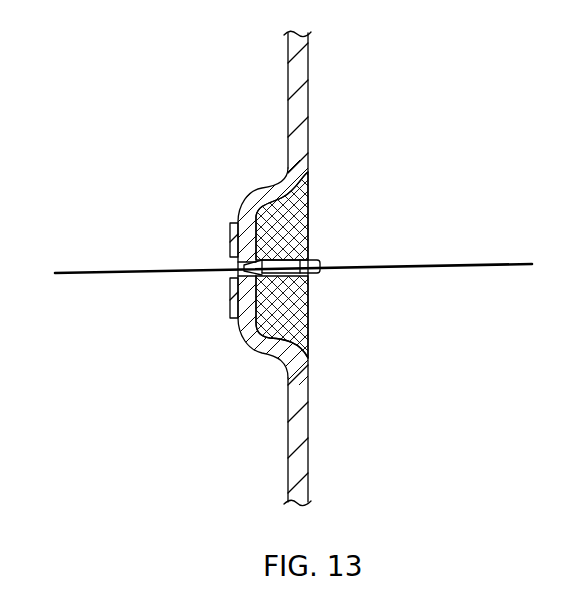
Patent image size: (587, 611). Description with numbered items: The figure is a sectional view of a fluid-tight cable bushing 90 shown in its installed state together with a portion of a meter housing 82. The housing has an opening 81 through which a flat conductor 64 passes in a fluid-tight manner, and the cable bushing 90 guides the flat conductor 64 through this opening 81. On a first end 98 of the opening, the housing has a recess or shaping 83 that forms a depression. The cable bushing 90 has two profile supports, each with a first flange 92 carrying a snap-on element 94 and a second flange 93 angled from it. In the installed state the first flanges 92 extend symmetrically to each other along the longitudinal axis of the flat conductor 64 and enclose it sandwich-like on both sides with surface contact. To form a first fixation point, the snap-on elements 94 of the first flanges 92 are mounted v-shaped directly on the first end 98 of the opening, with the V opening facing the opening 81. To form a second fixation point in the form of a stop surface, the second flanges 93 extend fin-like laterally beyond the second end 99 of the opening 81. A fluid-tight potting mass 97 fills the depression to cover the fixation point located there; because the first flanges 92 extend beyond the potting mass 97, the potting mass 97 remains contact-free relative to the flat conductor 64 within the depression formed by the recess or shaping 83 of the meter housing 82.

The cable bushing 90 is at (387, 83).
The meter housing 82 is at (287, 143).
The recess or shaping 83 is at (250, 203).
The snap-on element 94 is at (306, 238).
The potting mass 97 is at (313, 333).
The flat conductor 64 is at (428, 264).
The first flange 92 is at (312, 278).
The first end 98 is at (312, 257).
The opening 81 is at (238, 272).
The second end 99 is at (237, 266).
The second flange 93 is at (232, 295).